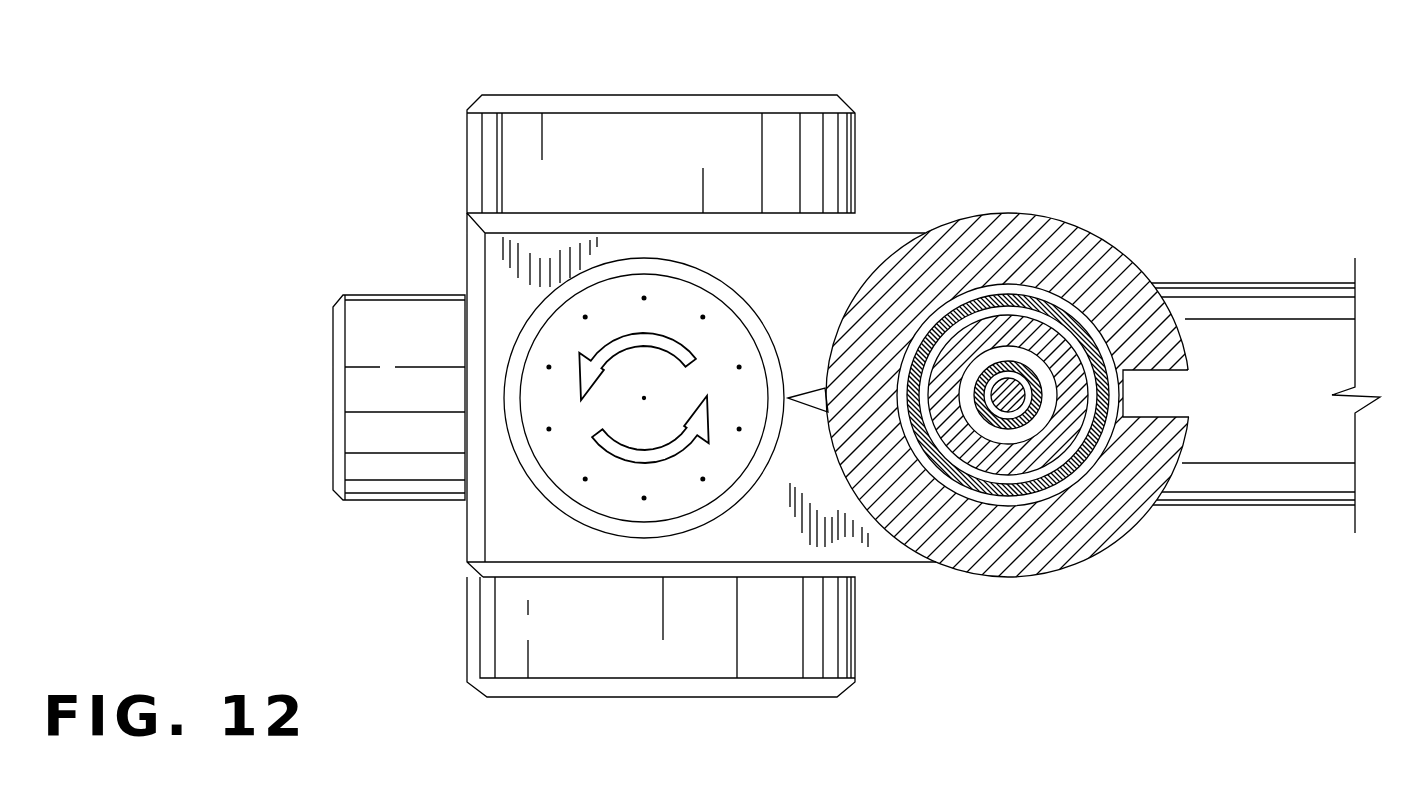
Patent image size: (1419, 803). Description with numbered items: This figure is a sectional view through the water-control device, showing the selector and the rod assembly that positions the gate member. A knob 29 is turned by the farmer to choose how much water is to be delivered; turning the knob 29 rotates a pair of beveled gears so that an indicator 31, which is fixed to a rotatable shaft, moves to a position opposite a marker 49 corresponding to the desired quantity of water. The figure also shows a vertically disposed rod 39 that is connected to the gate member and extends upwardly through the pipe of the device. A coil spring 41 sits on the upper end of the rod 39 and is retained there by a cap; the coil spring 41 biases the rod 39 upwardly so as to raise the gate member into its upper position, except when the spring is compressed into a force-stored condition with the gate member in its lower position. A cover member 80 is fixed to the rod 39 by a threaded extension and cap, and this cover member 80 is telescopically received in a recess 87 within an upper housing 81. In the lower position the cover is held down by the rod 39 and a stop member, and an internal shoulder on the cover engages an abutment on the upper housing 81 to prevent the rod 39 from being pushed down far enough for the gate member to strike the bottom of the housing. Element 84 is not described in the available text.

The knob 29 is at (402, 295).
The indicator 31 is at (657, 303).
The rod 39 is at (985, 425).
The coil spring 41 is at (1033, 422).
The marker 49 is at (813, 402).
The cover member 80 is at (992, 292).
The upper housing 81 is at (1045, 328).
The outlet conduit 84 is at (1172, 396).
The recess 87 is at (1100, 320).